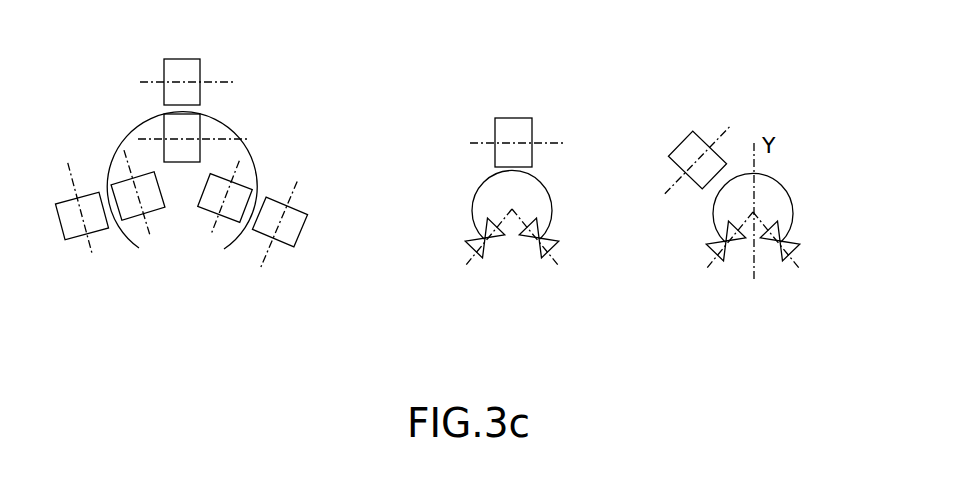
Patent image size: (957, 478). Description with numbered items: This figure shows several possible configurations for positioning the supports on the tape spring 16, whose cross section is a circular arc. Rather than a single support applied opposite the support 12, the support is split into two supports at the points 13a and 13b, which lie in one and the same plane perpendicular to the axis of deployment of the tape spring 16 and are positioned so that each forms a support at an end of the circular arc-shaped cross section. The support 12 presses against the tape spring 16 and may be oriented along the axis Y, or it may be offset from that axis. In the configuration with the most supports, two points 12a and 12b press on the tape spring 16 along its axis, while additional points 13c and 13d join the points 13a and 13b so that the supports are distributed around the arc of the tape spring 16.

The point 12 is at (515, 125).
The point 12a is at (200, 68).
The point 12b is at (200, 128).
The point 13a is at (238, 197).
The point 13b is at (287, 234).
The point 13c is at (73, 241).
The point 13d is at (122, 183).
The tape spring 16 is at (257, 168).